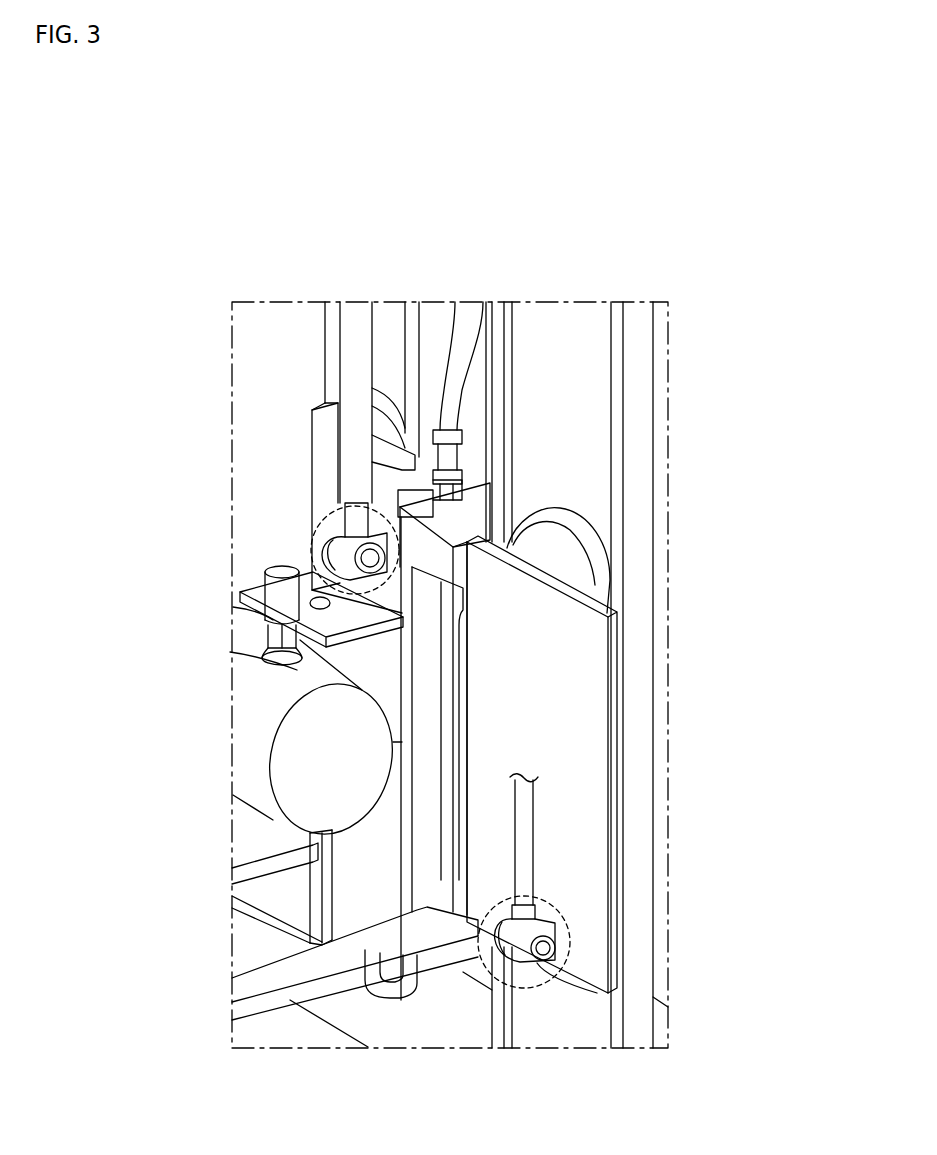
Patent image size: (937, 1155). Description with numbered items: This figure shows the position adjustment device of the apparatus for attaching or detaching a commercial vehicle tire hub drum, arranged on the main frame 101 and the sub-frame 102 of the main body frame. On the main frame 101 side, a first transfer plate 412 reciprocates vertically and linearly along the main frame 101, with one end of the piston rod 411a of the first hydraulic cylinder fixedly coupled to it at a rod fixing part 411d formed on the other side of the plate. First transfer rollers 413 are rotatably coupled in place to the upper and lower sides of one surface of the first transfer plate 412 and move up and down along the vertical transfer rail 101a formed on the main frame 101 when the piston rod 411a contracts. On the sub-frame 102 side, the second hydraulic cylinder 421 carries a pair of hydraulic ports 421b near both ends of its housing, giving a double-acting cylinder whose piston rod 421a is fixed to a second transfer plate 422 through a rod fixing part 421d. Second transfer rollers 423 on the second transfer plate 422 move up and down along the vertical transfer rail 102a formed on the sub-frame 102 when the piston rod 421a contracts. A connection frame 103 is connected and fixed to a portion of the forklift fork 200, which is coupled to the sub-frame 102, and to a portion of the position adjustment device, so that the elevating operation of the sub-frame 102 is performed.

The main frame 101 is at (635, 357).
The vertical transfer rail 101a is at (565, 333).
The sub-frame 102 is at (290, 315).
The vertical transfer rail 102a is at (388, 318).
The connection frame 103 is at (433, 666).
The forklift fork 200 is at (405, 787).
The piston rod 411a is at (527, 829).
The rod fixing part 411d is at (573, 940).
The first transfer plate 412 is at (560, 692).
The first transfer roller 413 is at (580, 543).
The second hydraulic cylinder 421 is at (335, 432).
The piston rod 421a is at (352, 502).
The hydraulic port 421b is at (385, 456).
The rod fixing part 421d is at (312, 548).
The second transfer plate 422 is at (327, 428).
The second transfer roller 423 is at (320, 377).